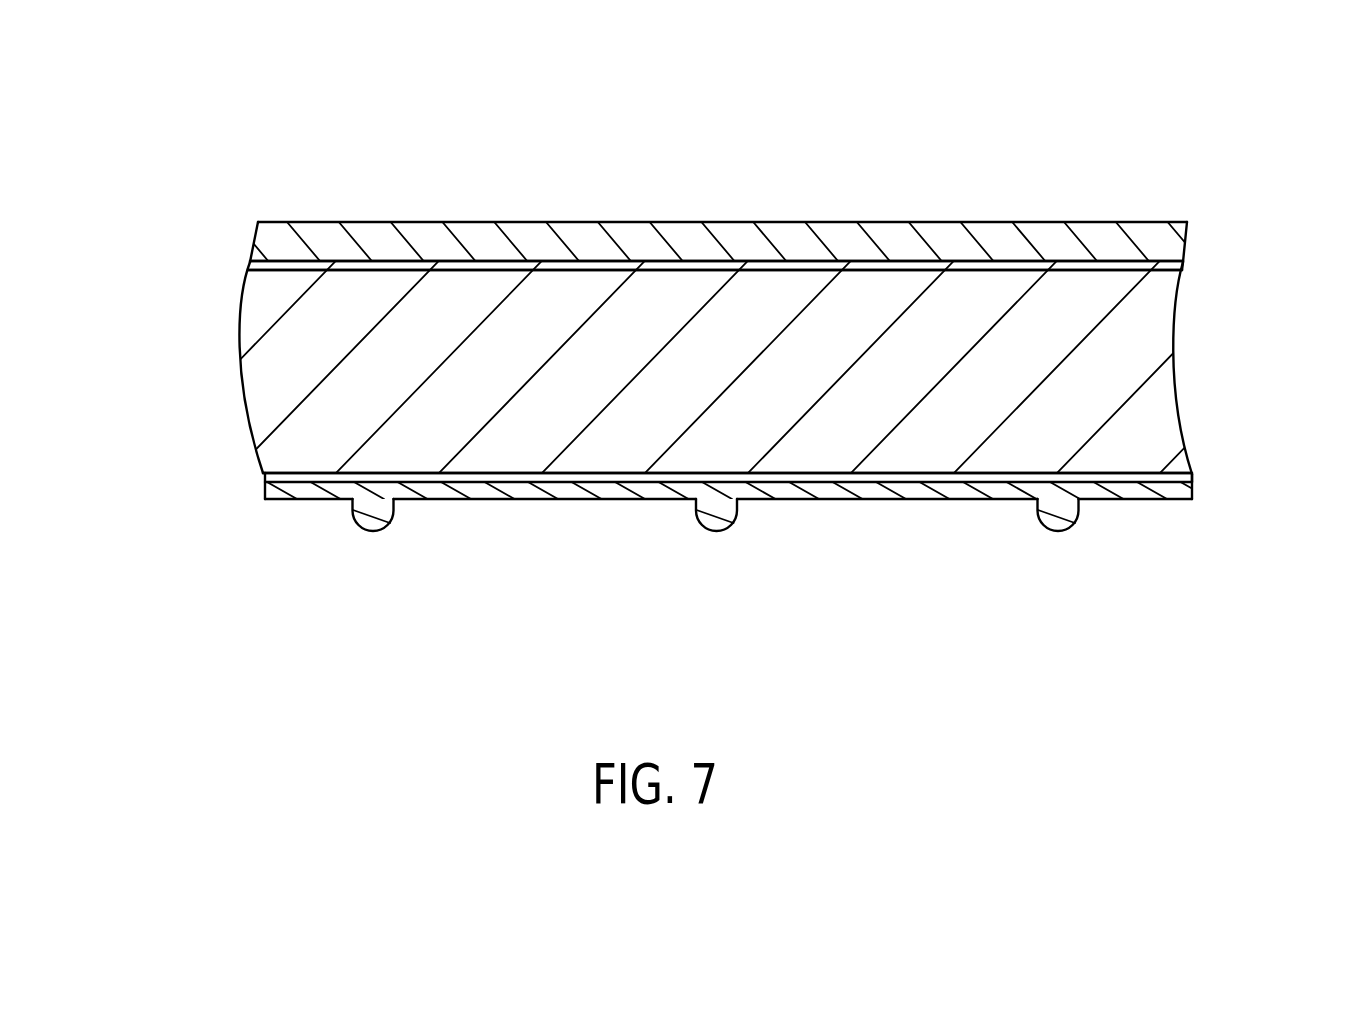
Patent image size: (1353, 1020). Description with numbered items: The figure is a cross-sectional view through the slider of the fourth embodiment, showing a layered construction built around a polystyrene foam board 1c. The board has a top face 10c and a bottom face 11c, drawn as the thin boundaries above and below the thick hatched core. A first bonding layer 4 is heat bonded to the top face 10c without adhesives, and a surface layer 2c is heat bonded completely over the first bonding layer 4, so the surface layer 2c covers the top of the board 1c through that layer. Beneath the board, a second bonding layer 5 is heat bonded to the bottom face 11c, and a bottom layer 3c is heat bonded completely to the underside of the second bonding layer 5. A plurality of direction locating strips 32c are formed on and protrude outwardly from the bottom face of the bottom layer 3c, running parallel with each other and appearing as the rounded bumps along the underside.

The polystyrene foam board 1c is at (258, 380).
The surface layer 2c is at (787, 227).
The top face 10c is at (332, 270).
The bottom face 11c is at (313, 472).
The bottom layer 3c is at (584, 509).
The direction locating strips 32c is at (372, 516).
The first bonding layer 4 is at (1192, 264).
The second bonding layer 5 is at (1203, 478).